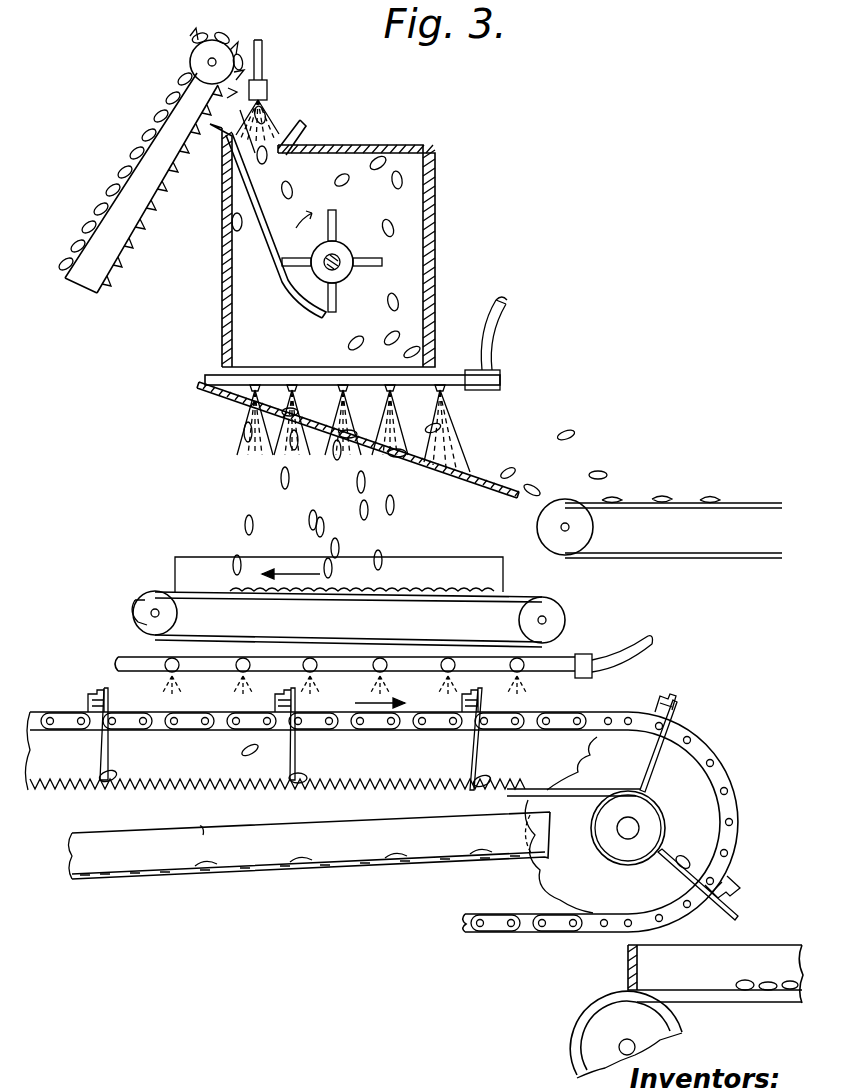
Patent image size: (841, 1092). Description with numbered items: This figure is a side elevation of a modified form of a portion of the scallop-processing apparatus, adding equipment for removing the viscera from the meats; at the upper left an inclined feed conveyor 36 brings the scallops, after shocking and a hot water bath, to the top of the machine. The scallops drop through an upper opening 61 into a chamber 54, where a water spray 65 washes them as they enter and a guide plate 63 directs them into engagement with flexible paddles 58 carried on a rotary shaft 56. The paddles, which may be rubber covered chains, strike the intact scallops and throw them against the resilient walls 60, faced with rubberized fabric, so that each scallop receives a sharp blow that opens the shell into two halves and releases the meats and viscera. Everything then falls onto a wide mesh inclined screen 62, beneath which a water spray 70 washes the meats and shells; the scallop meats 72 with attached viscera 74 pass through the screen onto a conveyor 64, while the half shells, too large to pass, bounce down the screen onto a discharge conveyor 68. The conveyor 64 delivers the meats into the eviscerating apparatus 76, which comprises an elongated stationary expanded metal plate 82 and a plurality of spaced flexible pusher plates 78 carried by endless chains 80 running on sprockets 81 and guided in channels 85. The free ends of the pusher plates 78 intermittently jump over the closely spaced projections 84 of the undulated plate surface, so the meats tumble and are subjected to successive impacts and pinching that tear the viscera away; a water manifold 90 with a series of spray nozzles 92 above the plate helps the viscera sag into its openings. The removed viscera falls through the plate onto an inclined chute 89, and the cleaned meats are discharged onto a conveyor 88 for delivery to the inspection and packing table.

The inclined feed conveyor 36 is at (125, 142).
The chamber 54 is at (373, 147).
The rotary shaft 56 is at (334, 260).
The flexible paddles 58 is at (337, 292).
The resilient walls 60 is at (228, 272).
The upper opening 61 is at (255, 153).
The inclined screen 62 is at (238, 407).
The guide plate 63 is at (268, 208).
The conveyor 64 is at (199, 590).
The water spray 65 is at (262, 92).
The discharge conveyor 68 is at (634, 502).
The water spray 70 is at (462, 423).
The scallop meats 72 is at (250, 526).
The viscera 74 is at (325, 526).
The eviscerating apparatus 76 is at (82, 696).
The flexible pusher plates 78 is at (102, 750).
The endless chains 80 is at (332, 812).
The sprockets 81 is at (678, 785).
The expanded metal plate 82 is at (410, 788).
The projections 84 is at (345, 790).
The channels 85 is at (620, 728).
The conveyor 88 is at (592, 1010).
The inclined chute 89 is at (287, 866).
The water manifold 90 is at (545, 668).
The spray nozzles 92 is at (386, 656).